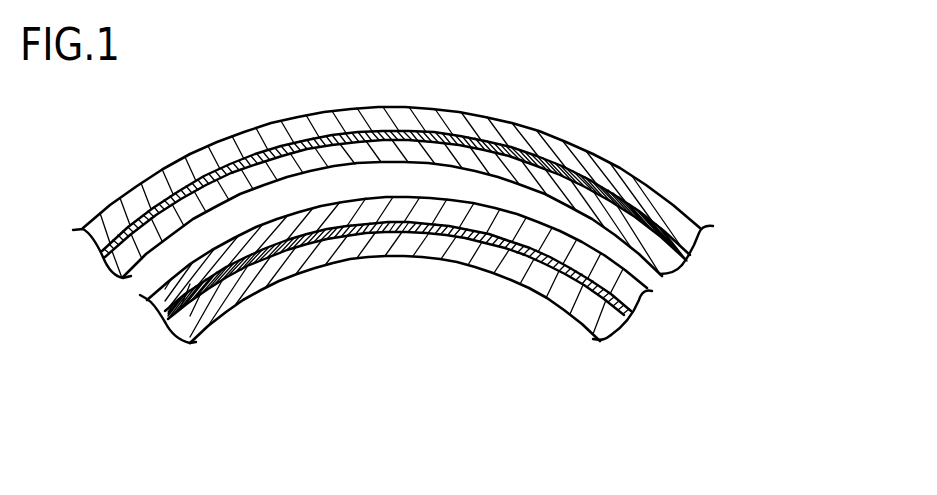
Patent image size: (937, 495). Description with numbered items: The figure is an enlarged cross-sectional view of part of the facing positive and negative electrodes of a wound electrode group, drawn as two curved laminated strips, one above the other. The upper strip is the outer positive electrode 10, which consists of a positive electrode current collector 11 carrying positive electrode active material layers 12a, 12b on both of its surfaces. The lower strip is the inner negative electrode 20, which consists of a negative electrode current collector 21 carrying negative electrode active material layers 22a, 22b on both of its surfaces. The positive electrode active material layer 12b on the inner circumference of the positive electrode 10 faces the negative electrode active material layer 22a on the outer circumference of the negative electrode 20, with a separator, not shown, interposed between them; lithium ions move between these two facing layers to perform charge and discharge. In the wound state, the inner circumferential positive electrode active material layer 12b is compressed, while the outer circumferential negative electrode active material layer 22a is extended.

The positive electrode 10 is at (463, 229).
The positive electrode current collector 11 is at (688, 256).
The positive electrode active material layer 12a is at (698, 242).
The positive electrode active material layer 12b is at (442, 239).
The negative electrode 20 is at (462, 332).
The negative electrode current collector 21 is at (624, 322).
The negative electrode active material layer 22a is at (640, 306).
The negative electrode active material layer 22b is at (439, 344).